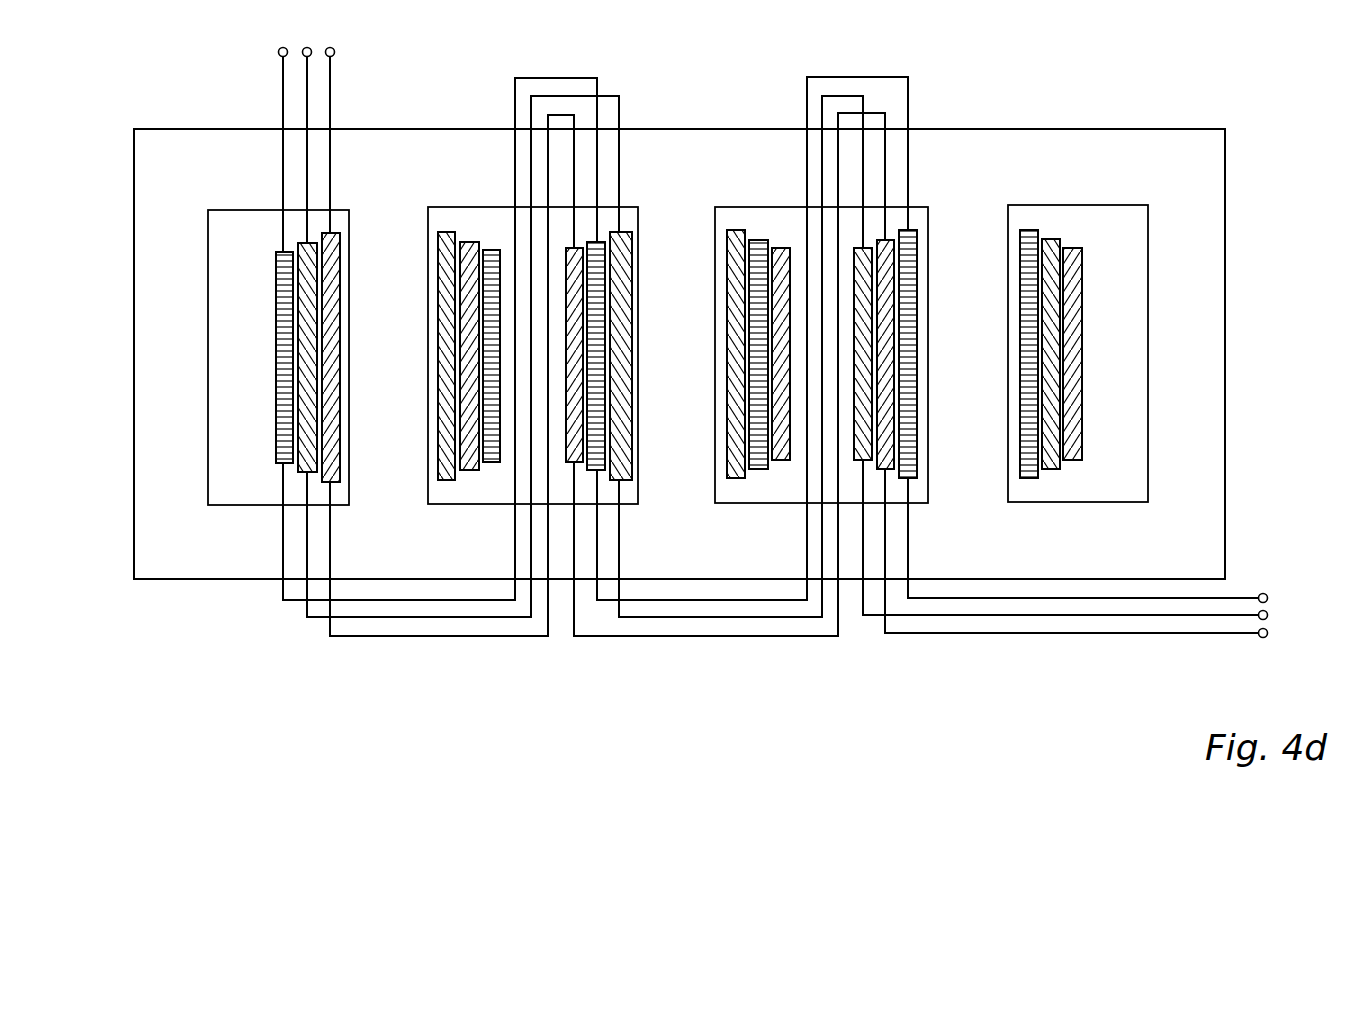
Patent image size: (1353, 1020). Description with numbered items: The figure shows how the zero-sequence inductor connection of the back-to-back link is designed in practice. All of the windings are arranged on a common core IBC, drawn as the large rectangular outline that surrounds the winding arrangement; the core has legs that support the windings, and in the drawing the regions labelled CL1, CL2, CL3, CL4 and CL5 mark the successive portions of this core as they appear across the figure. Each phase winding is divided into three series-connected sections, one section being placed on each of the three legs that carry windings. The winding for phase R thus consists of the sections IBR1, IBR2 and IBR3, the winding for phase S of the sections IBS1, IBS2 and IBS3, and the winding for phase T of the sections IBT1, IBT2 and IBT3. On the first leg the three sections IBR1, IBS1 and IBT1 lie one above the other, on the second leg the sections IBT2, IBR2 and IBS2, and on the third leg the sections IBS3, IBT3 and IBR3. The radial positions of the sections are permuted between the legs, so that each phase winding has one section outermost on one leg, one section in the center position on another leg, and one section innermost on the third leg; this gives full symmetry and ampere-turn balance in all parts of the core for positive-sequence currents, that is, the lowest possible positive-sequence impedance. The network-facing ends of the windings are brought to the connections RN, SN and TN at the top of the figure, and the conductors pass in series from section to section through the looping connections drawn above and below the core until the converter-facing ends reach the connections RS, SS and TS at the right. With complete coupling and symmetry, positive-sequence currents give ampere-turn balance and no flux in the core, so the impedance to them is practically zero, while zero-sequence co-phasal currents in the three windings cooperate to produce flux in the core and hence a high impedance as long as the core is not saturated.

The common core IBC is at (1170, 127).
The cell 1 CL1 is at (190, 442).
The cell 2 CL2 is at (410, 442).
The cell 3 CL3 is at (697, 442).
The cell 4 CL4 is at (990, 442).
The cell 5 CL5 is at (1207, 442).
The section of winding IBR IBR1 is at (283, 281).
The section of winding IBS IBS1 is at (305, 340).
The section of winding IBT IBT1 is at (327, 402).
The section of winding IBR IBR2 is at (600, 289).
The section of winding IBS IBS2 is at (620, 337).
The section of winding IBT IBT2 is at (573, 385).
The section of winding IBR IBR3 is at (912, 282).
The section of winding IBS IBS3 is at (865, 334).
The section of winding IBT IBT3 is at (888, 385).
The network-side connection of winding IBR RN is at (279, 50).
The network-side connection of winding IBS SN is at (307, 47).
The network-side connection of winding IBT TN is at (334, 50).
The converter-side connection of winding IBR RS is at (1268, 595).
The converter-side connection of winding IBS SS is at (1268, 614).
The converter-side connection of winding IBT TS is at (1268, 636).